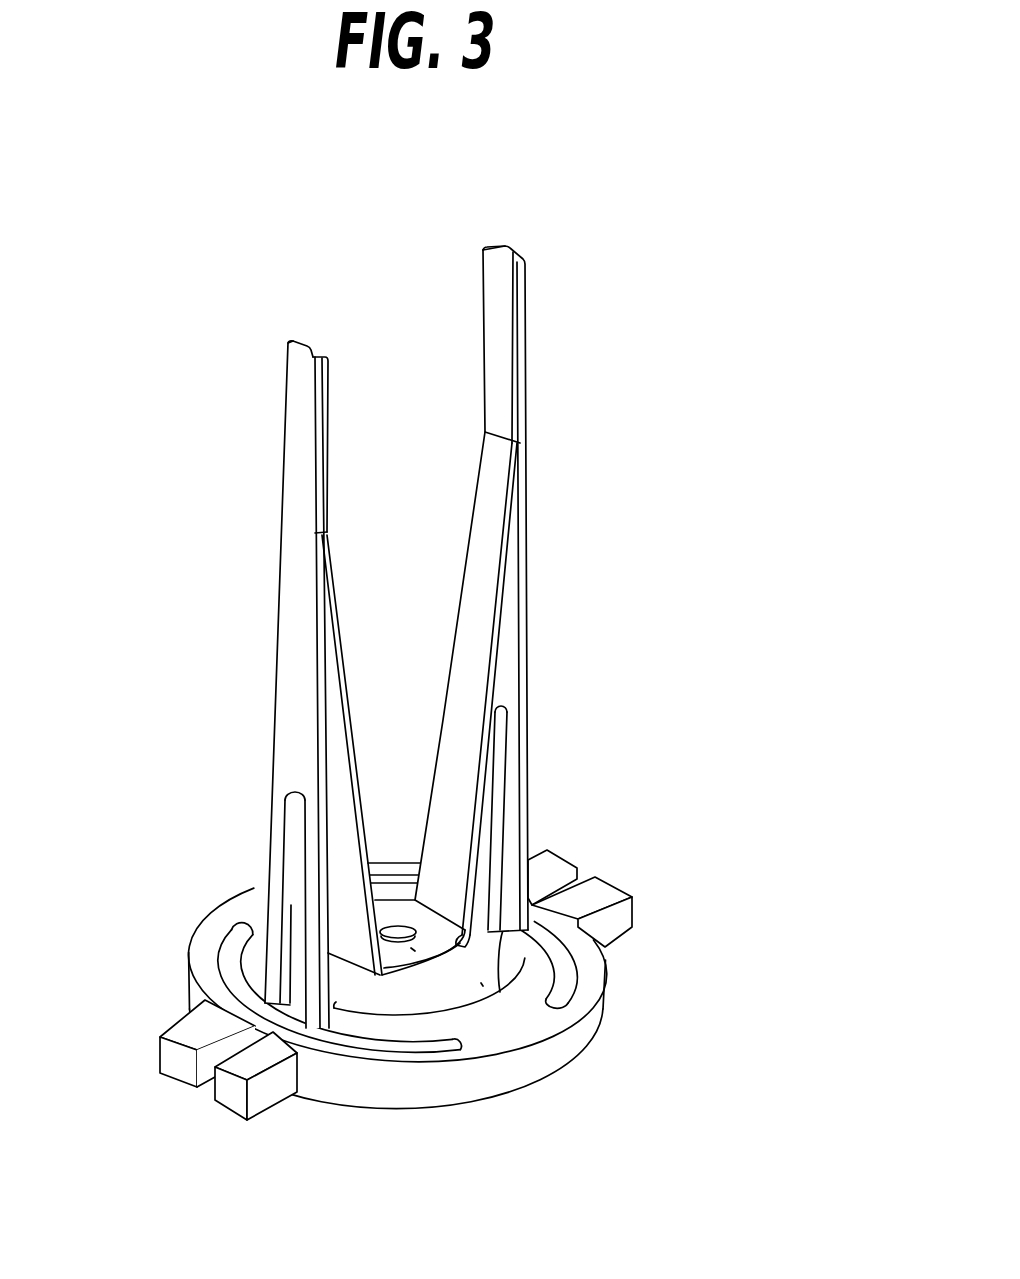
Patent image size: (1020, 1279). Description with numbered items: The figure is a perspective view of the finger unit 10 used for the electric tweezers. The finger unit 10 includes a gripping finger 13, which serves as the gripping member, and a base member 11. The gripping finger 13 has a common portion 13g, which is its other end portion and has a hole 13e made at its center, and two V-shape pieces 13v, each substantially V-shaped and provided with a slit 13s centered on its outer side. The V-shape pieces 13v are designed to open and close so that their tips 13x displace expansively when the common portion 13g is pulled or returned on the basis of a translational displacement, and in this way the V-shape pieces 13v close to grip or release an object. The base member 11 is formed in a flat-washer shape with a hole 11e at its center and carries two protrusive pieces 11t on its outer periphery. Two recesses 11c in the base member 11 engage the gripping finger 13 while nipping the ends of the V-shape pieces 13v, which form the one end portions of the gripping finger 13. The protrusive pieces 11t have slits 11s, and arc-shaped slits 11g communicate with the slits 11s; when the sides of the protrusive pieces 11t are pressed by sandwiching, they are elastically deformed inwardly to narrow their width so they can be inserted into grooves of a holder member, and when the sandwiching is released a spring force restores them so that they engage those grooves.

The finger unit 10 is at (396, 672).
The base member 11 is at (396, 1009).
The recess 11c is at (412, 1049).
The hole 11e is at (539, 1068).
The arc-shaped slit 11g is at (404, 981).
The slit 11s is at (238, 1100).
The protrusive piece 11t is at (396, 968).
The gripping finger 13 is at (397, 698).
The hole 13e is at (462, 1058).
The common portion 13g is at (412, 1056).
The slit 13s is at (397, 867).
The V-shape piece 13v is at (249, 684).
The tip 13x is at (396, 278).